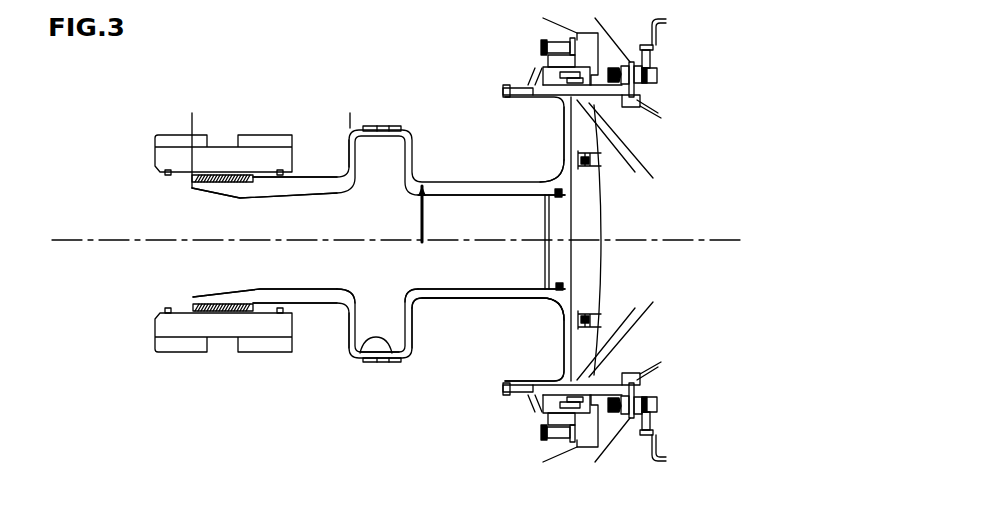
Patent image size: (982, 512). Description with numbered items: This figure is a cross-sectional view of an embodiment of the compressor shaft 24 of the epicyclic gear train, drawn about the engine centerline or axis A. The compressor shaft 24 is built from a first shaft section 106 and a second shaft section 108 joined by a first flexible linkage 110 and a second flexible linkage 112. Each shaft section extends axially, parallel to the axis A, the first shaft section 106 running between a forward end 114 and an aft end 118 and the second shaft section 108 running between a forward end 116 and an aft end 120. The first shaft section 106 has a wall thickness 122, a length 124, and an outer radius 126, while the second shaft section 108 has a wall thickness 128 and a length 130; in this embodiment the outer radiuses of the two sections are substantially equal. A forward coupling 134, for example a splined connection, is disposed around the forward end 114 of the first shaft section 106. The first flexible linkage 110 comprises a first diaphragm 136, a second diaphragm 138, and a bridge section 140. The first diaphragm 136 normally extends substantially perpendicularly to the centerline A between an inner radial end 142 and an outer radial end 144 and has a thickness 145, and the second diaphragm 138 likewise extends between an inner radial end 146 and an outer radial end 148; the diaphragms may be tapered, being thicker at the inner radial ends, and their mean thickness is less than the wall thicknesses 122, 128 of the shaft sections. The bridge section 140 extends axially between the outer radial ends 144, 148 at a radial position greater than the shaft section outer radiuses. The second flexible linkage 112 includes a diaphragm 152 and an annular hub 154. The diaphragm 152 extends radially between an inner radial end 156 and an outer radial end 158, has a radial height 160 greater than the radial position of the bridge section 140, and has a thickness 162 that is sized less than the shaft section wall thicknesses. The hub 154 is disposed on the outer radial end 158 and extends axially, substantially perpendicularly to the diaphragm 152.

The axis A is at (122, 238).
The compressor shaft 24 is at (357, 114).
The first shaft section 106 is at (311, 286).
The second shaft section 108 is at (502, 287).
The first flexible linkage 110 is at (395, 114).
The second flexible linkage 112 is at (557, 373).
The forward end 114 is at (251, 286).
The forward end 116 is at (421, 284).
The aft end 118 is at (334, 284).
The aft end 120 is at (551, 257).
The wall thickness 122 is at (325, 194).
The length 124 is at (350, 116).
The outer radius 126 is at (378, 137).
The wall thickness 128 is at (458, 270).
The length 130 is at (564, 125).
The forward coupling 134 is at (230, 317).
The first diaphragm 136 is at (348, 355).
The second diaphragm 138 is at (412, 328).
The bridge section 140 is at (387, 358).
The inner radial end 142 is at (355, 297).
The outer radial end 144 is at (380, 160).
The thickness 145 is at (372, 160).
The inner radial end 146 is at (412, 291).
The outer radial end 148 is at (382, 346).
The diaphragm 152 is at (562, 135).
The annular hub 154 is at (612, 107).
The inner radial end 156 is at (555, 178).
The outer radial end 158 is at (552, 106).
The radial height 160 is at (573, 203).
The thickness 162 is at (560, 312).